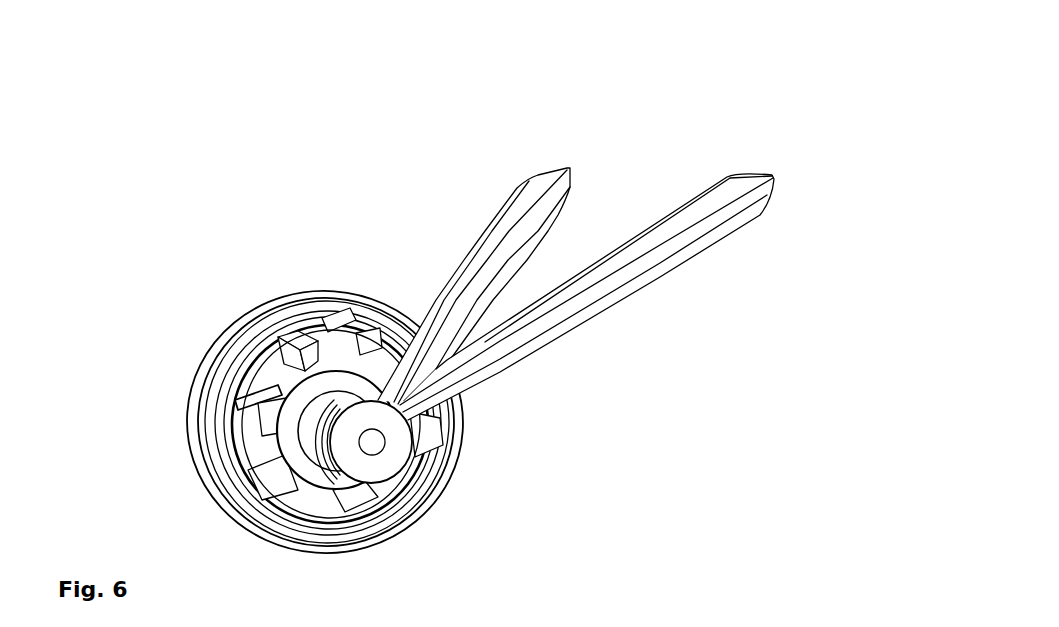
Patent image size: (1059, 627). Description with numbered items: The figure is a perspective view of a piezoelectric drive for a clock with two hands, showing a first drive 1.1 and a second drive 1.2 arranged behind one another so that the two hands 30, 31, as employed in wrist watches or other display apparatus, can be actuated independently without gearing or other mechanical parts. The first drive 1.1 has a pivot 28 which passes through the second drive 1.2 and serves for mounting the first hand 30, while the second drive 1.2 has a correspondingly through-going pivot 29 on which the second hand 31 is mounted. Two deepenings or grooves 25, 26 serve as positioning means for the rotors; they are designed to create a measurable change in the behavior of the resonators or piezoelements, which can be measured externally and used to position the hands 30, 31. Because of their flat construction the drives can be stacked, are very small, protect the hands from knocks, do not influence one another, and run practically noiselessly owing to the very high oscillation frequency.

The first drive 1.1 is at (295, 398).
The second drive 1.2 is at (270, 318).
The groove 25 is at (275, 361).
The groove 26 is at (265, 383).
The pivot 28 is at (267, 442).
The pivot 29 is at (329, 393).
The first hand 30 is at (727, 207).
The second hand 31 is at (472, 297).